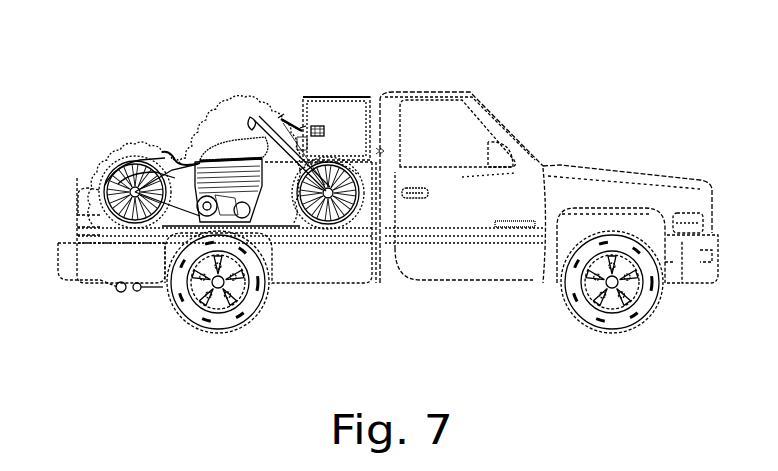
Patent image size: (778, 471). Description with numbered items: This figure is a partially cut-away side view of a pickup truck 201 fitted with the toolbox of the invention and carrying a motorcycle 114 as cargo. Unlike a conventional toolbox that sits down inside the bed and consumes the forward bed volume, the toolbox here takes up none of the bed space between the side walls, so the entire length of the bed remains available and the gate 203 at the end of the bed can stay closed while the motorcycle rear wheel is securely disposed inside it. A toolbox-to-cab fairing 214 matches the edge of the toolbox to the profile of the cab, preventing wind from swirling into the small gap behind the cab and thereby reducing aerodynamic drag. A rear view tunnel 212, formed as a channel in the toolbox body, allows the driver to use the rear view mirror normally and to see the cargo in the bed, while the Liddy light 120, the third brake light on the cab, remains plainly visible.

The pickup truck 201 is at (617, 193).
The Liddy light 120 is at (380, 97).
The toolbox-to-cab fairing 214 is at (370, 97).
The gate 203 is at (77, 178).
The motorcycle 114 is at (223, 127).
The rear view tunnel 212 is at (300, 118).